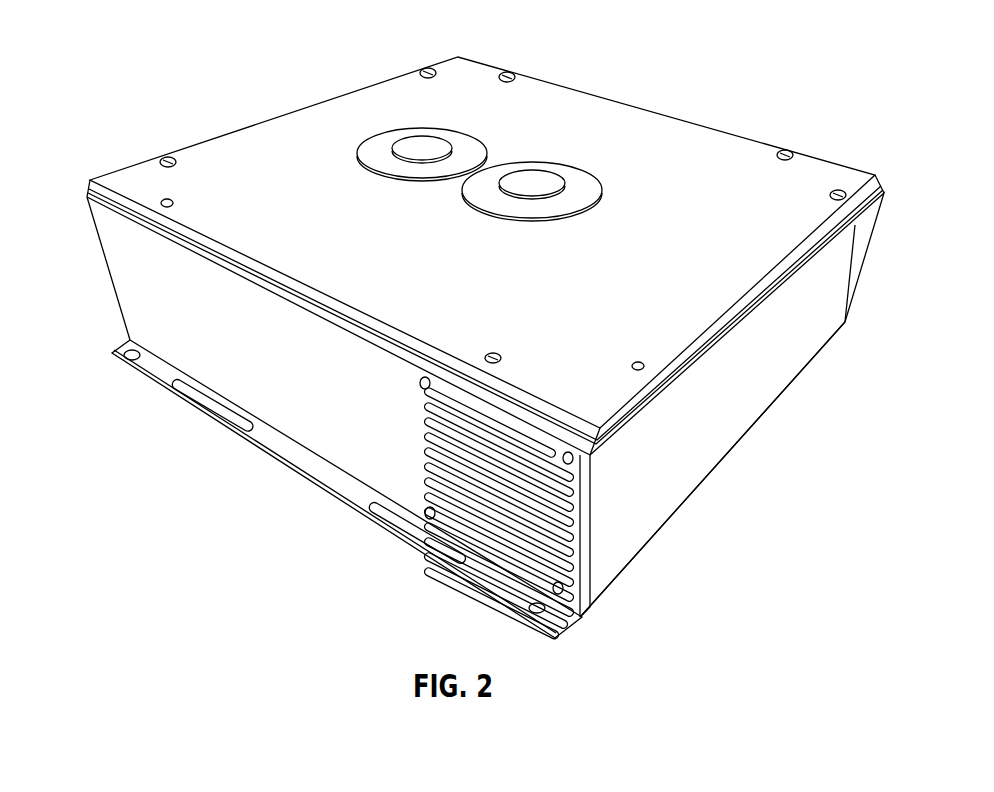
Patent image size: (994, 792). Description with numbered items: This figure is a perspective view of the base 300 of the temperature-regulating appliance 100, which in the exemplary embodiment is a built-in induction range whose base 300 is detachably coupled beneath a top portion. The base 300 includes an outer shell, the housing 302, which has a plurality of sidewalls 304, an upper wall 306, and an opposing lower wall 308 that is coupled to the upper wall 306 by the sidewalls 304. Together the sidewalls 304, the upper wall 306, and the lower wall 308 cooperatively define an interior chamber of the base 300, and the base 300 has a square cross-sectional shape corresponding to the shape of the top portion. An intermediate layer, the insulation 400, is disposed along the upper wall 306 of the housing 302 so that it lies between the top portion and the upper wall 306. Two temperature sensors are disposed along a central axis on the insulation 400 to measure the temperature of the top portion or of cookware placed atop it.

The temperature-regulating appliance 100 is at (135, 53).
The base 300 is at (692, 104).
The housing 302 is at (640, 497).
The sidewalls 304 is at (187, 350).
The upper wall 306 is at (211, 250).
The lower wall 308 is at (717, 474).
The insulation 400 is at (268, 165).